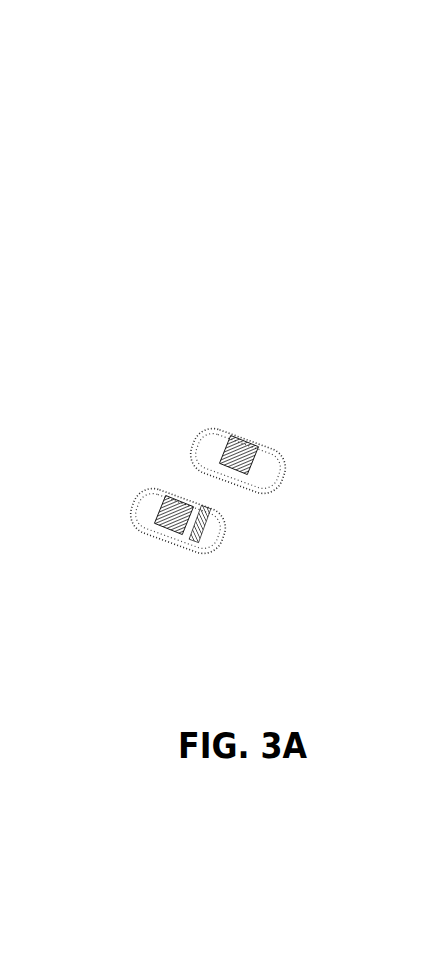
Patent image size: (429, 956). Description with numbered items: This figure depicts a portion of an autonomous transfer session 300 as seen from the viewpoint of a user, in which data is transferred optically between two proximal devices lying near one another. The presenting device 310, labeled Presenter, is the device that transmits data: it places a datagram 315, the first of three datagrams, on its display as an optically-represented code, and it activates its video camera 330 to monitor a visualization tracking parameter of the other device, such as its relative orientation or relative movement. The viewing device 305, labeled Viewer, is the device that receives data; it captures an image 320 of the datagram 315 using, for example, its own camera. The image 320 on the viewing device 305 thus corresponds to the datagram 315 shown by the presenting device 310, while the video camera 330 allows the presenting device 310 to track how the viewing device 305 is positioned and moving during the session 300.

The autonomous transfer session 300 is at (190, 148).
The viewing device 305 is at (248, 437).
The presenting device 310 is at (210, 555).
The datagram 315 is at (182, 530).
The image 320 is at (230, 437).
The video camera 330 is at (142, 497).